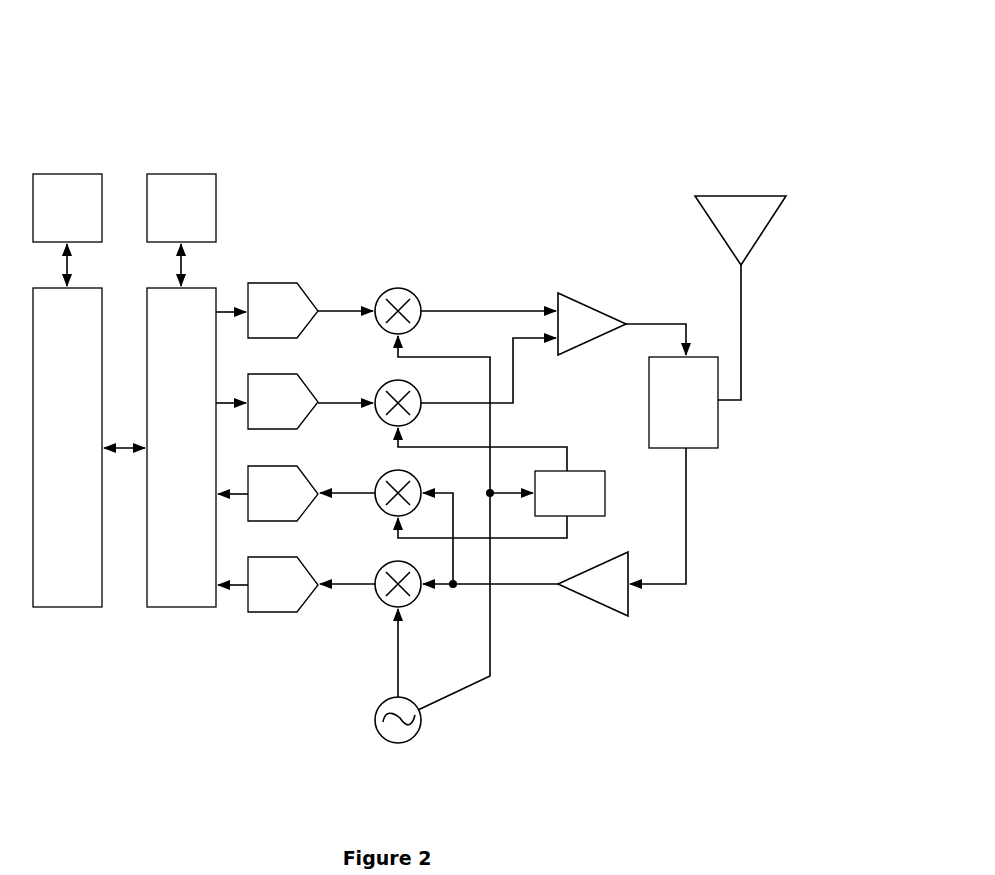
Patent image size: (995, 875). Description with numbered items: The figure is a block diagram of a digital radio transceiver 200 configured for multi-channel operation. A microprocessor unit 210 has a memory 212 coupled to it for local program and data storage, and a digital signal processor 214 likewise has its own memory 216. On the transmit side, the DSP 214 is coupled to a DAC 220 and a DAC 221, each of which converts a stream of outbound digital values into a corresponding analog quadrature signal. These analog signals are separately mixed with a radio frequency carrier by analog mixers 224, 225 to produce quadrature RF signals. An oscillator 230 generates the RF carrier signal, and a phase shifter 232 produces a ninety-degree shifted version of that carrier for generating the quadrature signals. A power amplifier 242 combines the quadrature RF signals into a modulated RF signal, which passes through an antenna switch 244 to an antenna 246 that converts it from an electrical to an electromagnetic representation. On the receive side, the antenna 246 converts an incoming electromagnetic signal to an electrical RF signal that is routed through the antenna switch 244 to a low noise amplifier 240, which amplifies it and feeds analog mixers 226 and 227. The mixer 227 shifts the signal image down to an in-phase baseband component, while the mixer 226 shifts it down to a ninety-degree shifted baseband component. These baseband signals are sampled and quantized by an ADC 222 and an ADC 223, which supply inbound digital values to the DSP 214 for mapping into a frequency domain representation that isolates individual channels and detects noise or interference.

The digital radio transceiver 200 is at (592, 93).
The microprocessor unit (MPU) 210 is at (52, 467).
The memory 212 is at (52, 228).
The digital signal processor (DSP) 214 is at (166, 467).
The memory 216 is at (166, 228).
The digital to analog converter (DAC) 220 is at (259, 330).
The digital to analog converter (DAC) 221 is at (259, 421).
The analog to digital converter (ADC) 222 is at (259, 513).
The analog to digital converter (ADC) 223 is at (259, 604).
The analog mixer 224 is at (383, 283).
The analog mixer 225 is at (383, 375).
The analog mixer 226 is at (378, 469).
The analog mixer 227 is at (378, 559).
The oscillator 230 is at (378, 711).
The phase shifter 232 is at (555, 502).
The low noise amplifier (LNA) 240 is at (606, 616).
The power amplifier (PA) 242 is at (575, 292).
The antenna switch 244 is at (669, 410).
The antenna 246 is at (712, 232).